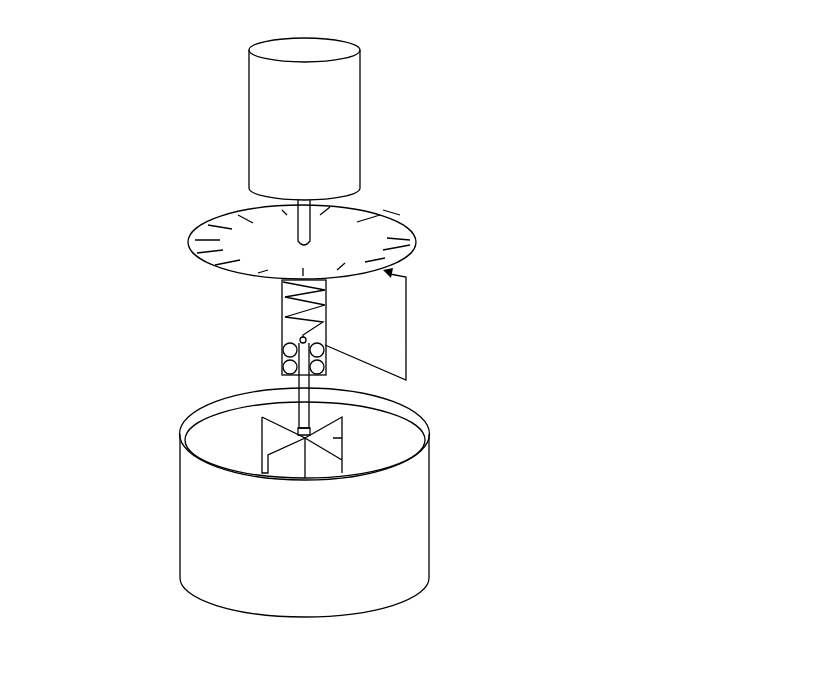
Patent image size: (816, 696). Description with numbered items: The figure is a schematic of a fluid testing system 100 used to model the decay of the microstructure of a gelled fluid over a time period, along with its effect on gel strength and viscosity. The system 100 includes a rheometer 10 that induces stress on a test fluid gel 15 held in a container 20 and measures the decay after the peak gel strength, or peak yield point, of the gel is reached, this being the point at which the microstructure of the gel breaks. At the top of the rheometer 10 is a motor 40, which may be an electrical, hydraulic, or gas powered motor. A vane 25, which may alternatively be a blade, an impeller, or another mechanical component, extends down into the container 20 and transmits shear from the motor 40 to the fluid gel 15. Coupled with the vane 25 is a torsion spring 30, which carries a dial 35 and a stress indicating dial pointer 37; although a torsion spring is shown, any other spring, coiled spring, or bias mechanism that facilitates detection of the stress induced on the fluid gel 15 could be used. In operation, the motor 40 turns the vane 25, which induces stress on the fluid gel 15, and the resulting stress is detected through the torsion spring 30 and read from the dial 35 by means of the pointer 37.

The fluid testing system 100 is at (144, 34).
The rheometer 10 is at (422, 164).
The motor 40 is at (346, 108).
The dial 35 is at (205, 233).
The stress indicating dial pointer 37 is at (408, 288).
The torsion spring 30 is at (282, 325).
The vane 25 is at (335, 437).
The test fluid gel 15 is at (212, 437).
The container 20 is at (200, 540).